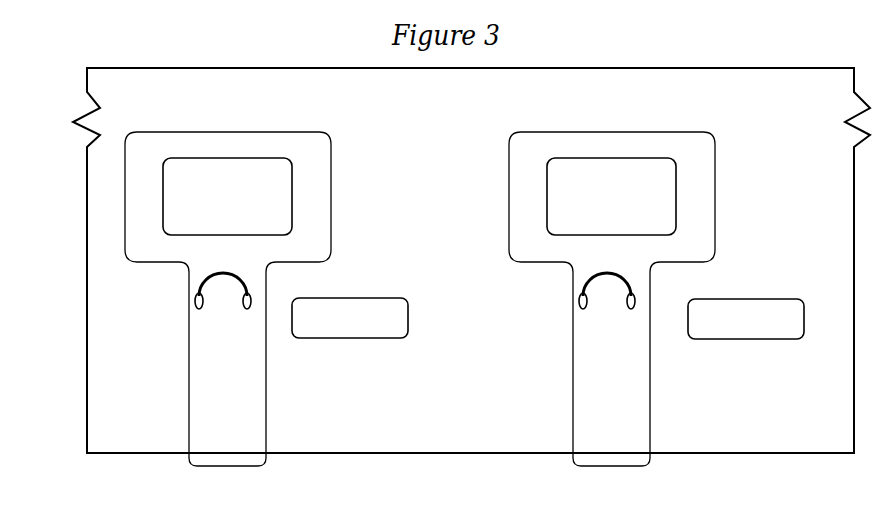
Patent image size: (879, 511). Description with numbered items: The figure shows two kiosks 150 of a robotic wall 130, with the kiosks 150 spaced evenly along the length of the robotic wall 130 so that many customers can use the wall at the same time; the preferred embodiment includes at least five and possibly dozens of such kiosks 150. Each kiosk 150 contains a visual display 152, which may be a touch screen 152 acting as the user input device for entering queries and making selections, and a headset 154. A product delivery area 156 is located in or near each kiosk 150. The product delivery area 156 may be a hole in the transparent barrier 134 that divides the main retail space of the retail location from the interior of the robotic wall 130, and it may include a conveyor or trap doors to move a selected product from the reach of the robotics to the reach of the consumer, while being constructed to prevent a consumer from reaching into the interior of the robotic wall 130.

The robotic wall 130 is at (87, 223).
The transparent barrier 134 is at (437, 189).
The kiosk 150 is at (305, 132).
The visual display 152 is at (213, 158).
The headset 154 is at (195, 288).
The product delivery area 156 is at (357, 297).